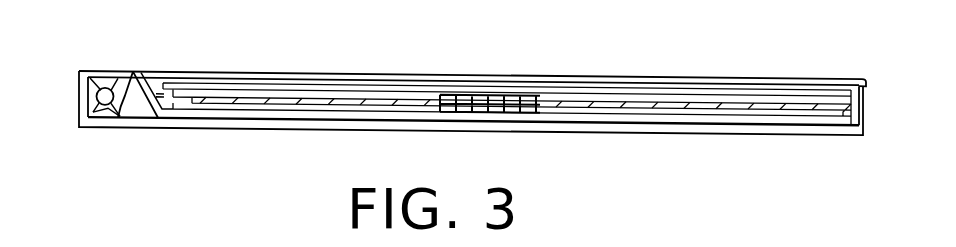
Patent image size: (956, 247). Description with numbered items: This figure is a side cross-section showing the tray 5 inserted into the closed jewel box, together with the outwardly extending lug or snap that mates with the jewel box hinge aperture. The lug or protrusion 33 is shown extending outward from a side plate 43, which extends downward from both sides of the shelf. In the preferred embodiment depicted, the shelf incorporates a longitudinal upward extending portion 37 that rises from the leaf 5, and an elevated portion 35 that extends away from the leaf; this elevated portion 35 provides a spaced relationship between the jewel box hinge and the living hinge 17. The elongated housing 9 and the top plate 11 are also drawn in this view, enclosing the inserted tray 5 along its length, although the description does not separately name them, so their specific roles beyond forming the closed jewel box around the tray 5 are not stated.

The tray 5 is at (210, 120).
The housing frame 9 is at (801, 134).
The top plate 11 is at (780, 79).
The living hinge 17 is at (135, 72).
The lug or protrusion 33 is at (101, 99).
The elevated portion 35 is at (97, 74).
The longitudinal upward extending portion 37 is at (157, 95).
The side plate 43 is at (120, 105).